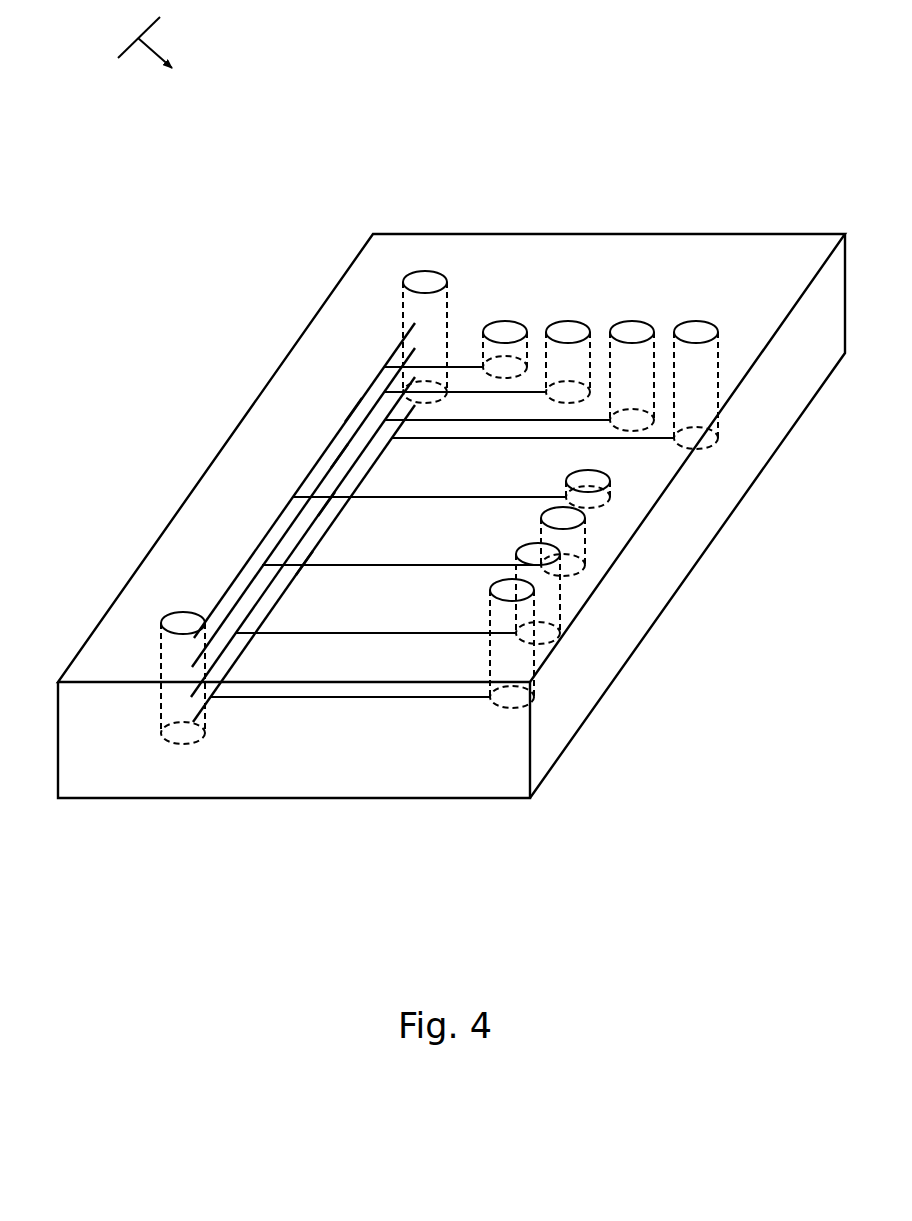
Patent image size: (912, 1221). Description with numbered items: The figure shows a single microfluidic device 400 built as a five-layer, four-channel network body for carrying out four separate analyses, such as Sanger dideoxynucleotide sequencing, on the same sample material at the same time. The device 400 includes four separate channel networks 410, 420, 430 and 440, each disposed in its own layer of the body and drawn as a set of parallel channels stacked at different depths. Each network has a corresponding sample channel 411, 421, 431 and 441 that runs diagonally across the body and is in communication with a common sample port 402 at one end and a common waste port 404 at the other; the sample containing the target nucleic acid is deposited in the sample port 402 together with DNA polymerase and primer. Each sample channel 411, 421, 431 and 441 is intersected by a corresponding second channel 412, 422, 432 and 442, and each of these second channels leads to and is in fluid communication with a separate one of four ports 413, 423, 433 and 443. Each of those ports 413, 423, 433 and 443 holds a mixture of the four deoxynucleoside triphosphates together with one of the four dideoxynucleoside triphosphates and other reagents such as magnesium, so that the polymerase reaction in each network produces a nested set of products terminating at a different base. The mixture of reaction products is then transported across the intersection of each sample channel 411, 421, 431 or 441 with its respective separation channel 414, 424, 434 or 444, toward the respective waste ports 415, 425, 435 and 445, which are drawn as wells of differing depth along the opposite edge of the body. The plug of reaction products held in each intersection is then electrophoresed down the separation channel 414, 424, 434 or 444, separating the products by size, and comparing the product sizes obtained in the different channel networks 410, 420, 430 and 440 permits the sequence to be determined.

The microfluidic device 400 is at (135, 39).
The sample port 402 is at (425, 271).
The waste port 404 is at (156, 623).
The channel network 410 is at (394, 346).
The channel network 420 is at (379, 393).
The channel network 430 is at (379, 420).
The channel network 440 is at (369, 465).
The sample channel 411 is at (352, 408).
The sample channel 421 is at (340, 455).
The sample channel 431 is at (327, 503).
The sample channel 441 is at (304, 563).
The second channel 412 is at (465, 364).
The second channel 422 is at (538, 389).
The second channel 432 is at (598, 417).
The second channel 442 is at (663, 435).
The port 413 is at (503, 320).
The port 423 is at (567, 320).
The port 433 is at (630, 320).
The port 443 is at (694, 320).
The separation channel 414 is at (452, 496).
The separation channel 424 is at (410, 564).
The separation channel 434 is at (365, 632).
The separation channel 444 is at (320, 698).
The waste port 415 is at (611, 493).
The waste port 425 is at (585, 542).
The waste port 435 is at (560, 597).
The waste port 445 is at (534, 655).